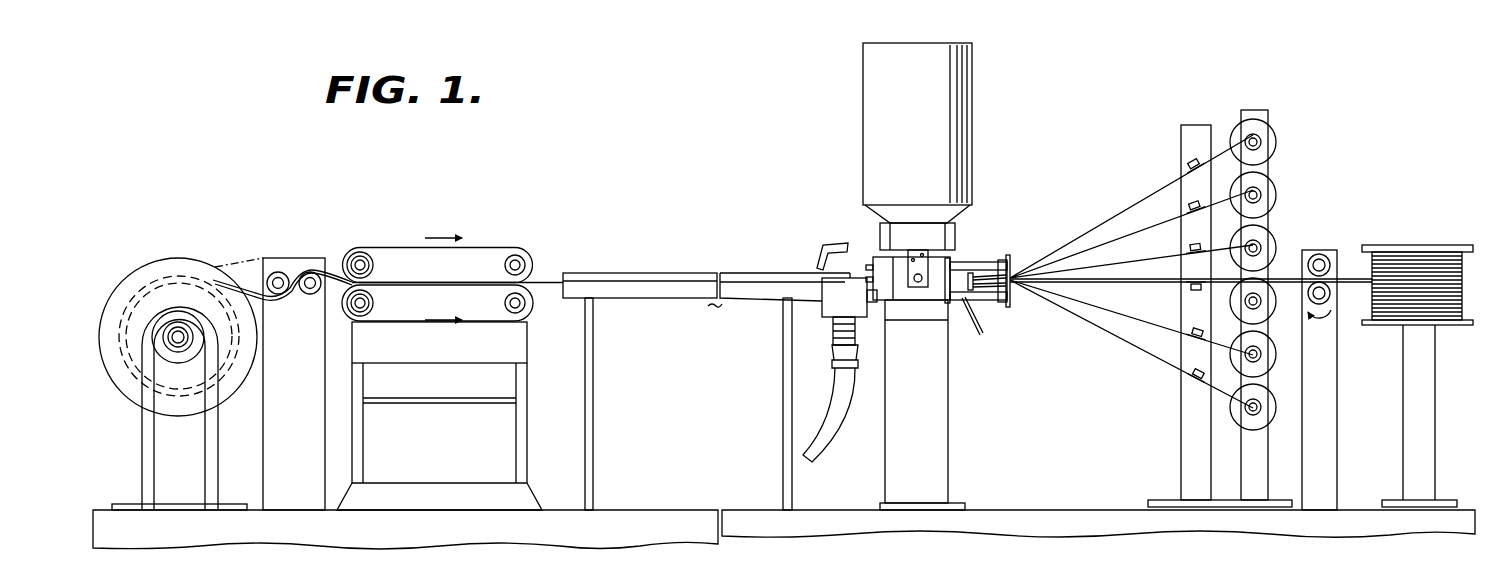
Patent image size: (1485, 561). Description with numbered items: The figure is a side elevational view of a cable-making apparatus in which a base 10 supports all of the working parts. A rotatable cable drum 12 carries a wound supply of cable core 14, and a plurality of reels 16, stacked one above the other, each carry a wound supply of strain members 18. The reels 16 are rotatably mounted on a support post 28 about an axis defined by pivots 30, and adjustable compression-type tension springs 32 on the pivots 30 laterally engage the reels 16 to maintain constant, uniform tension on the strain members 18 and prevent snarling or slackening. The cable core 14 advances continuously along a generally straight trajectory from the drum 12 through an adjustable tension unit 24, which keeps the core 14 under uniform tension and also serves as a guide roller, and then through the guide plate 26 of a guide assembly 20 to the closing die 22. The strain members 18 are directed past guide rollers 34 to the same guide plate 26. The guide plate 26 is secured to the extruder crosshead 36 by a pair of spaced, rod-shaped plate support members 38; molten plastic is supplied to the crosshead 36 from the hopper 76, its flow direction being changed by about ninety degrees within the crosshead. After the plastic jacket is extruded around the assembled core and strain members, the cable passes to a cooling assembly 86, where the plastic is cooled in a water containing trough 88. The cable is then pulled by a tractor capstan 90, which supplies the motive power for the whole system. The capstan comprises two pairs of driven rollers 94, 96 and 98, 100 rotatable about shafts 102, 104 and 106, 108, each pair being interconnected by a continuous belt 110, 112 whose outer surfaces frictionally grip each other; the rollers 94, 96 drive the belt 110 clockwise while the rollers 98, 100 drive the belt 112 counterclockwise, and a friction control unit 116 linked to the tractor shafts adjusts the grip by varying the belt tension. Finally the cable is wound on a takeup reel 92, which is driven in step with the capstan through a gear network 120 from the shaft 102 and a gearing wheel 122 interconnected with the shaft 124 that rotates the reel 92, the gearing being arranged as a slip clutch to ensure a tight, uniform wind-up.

The base 10 is at (1000, 512).
The cable drum 12 is at (1411, 244).
The cable core 14 is at (1357, 289).
The reels 16 is at (1262, 248).
The strain members 18 is at (1090, 190).
The guide assembly 20 is at (965, 323).
The closing die 22 is at (983, 262).
The tension unit 24 is at (1323, 261).
The guide plate 26 is at (1011, 308).
The support post 28 is at (1258, 467).
The pivots 30 is at (1250, 138).
The tension springs 32 is at (1258, 140).
The guide rollers 34 is at (1190, 203).
The extruder crosshead 36 is at (923, 299).
The plate support members 38 is at (1000, 265).
The hopper 76 is at (875, 122).
The cooling assembly 86 is at (736, 271).
The water containing trough 88 is at (653, 272).
The tractor capstan 90 is at (436, 284).
The takeup reel 92 is at (131, 274).
The driven roller 94 is at (398, 252).
The driven roller 96 is at (530, 263).
The driven roller 98 is at (380, 312).
The driven roller 100 is at (512, 305).
The shaft 102 is at (360, 265).
The shaft 104 is at (515, 263).
The shaft 106 is at (360, 303).
The shaft 108 is at (528, 308).
The continuous belt 110 is at (420, 247).
The continuous belt 112 is at (433, 323).
The friction control unit 116 is at (392, 367).
The gear network 120 is at (243, 261).
The gearing wheel 122 is at (170, 270).
The shaft 124 is at (180, 345).